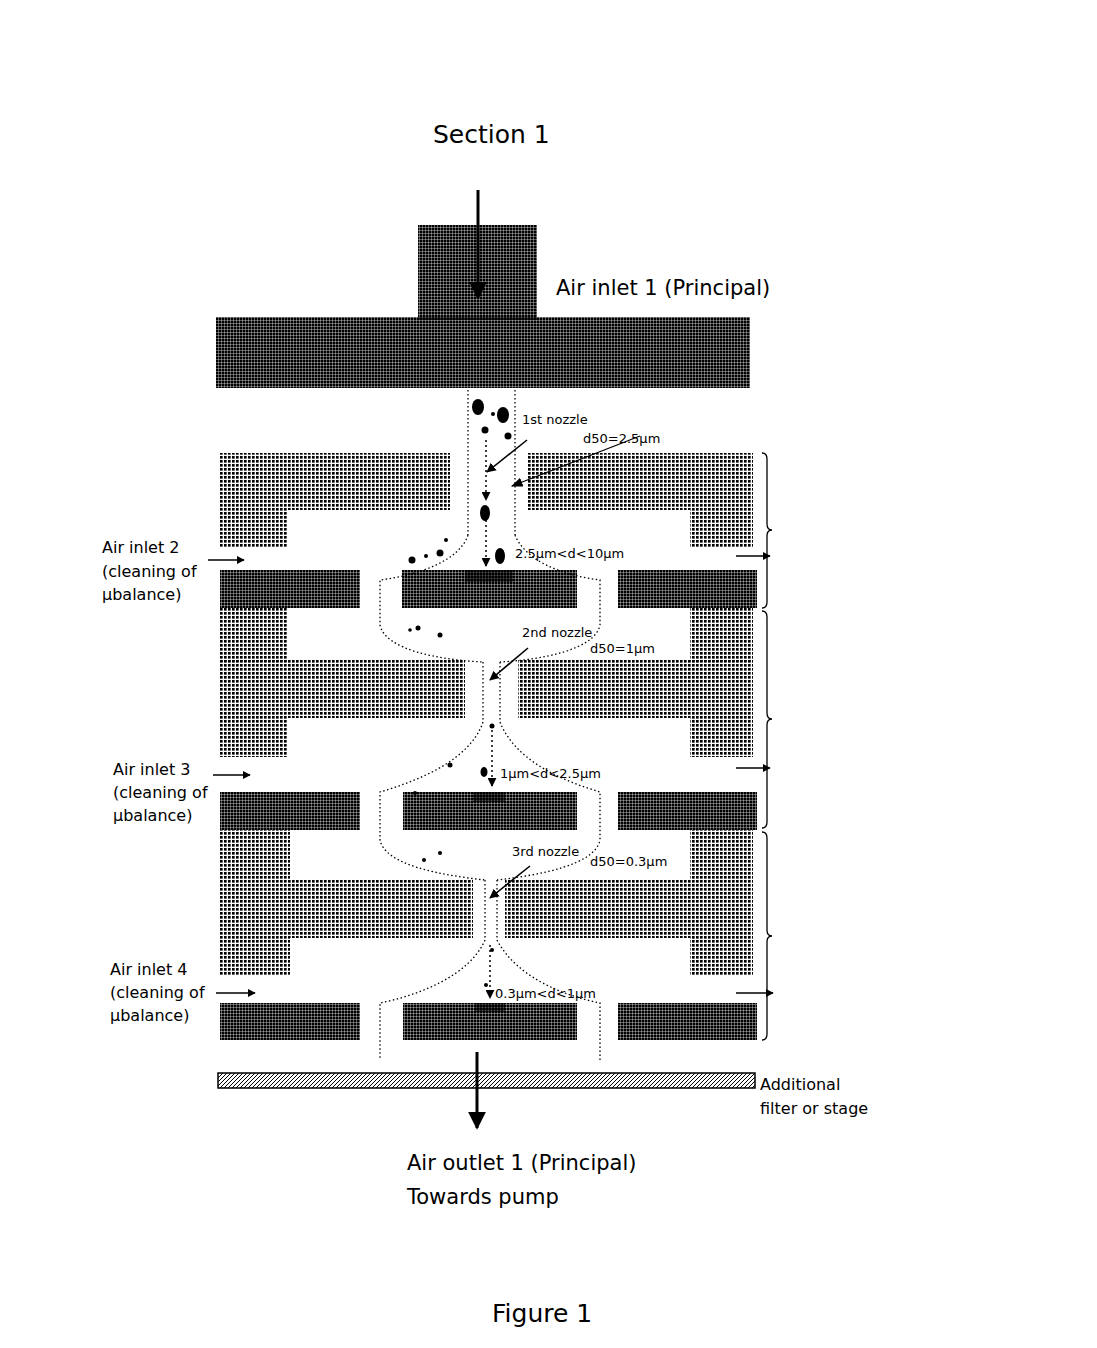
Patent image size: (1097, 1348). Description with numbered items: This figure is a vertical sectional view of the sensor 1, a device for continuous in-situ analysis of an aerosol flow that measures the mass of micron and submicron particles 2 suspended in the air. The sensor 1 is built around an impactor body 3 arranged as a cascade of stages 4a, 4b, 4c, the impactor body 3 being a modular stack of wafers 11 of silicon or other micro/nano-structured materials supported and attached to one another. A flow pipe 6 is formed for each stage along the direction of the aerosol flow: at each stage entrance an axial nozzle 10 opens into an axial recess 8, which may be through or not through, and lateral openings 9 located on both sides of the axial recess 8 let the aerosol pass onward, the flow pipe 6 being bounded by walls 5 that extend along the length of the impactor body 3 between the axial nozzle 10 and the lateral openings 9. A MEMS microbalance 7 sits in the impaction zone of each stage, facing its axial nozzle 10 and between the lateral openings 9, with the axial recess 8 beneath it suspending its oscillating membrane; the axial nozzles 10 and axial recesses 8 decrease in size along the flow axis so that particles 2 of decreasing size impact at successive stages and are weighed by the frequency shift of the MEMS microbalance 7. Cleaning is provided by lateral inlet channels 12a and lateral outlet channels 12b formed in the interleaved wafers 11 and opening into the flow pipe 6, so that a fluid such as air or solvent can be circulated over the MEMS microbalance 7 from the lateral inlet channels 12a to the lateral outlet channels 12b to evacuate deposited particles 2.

The sensor 1 is at (722, 222).
The particles 2 is at (472, 398).
The impactor body 3 is at (338, 450).
The stage 4a is at (546, 532).
The stage 4b is at (546, 719).
The stage 4c is at (544, 935).
The walls 5 is at (277, 521).
The flow pipe 6 is at (374, 523).
The MEMS microbalance 7 is at (468, 1000).
The axial recess 8 is at (480, 818).
The lateral openings 9 is at (605, 599).
The axial nozzle 10 is at (517, 486).
The wafers 11 is at (708, 473).
The lateral inlet channels 12a is at (277, 992).
The lateral outlet channels 12b is at (705, 998).